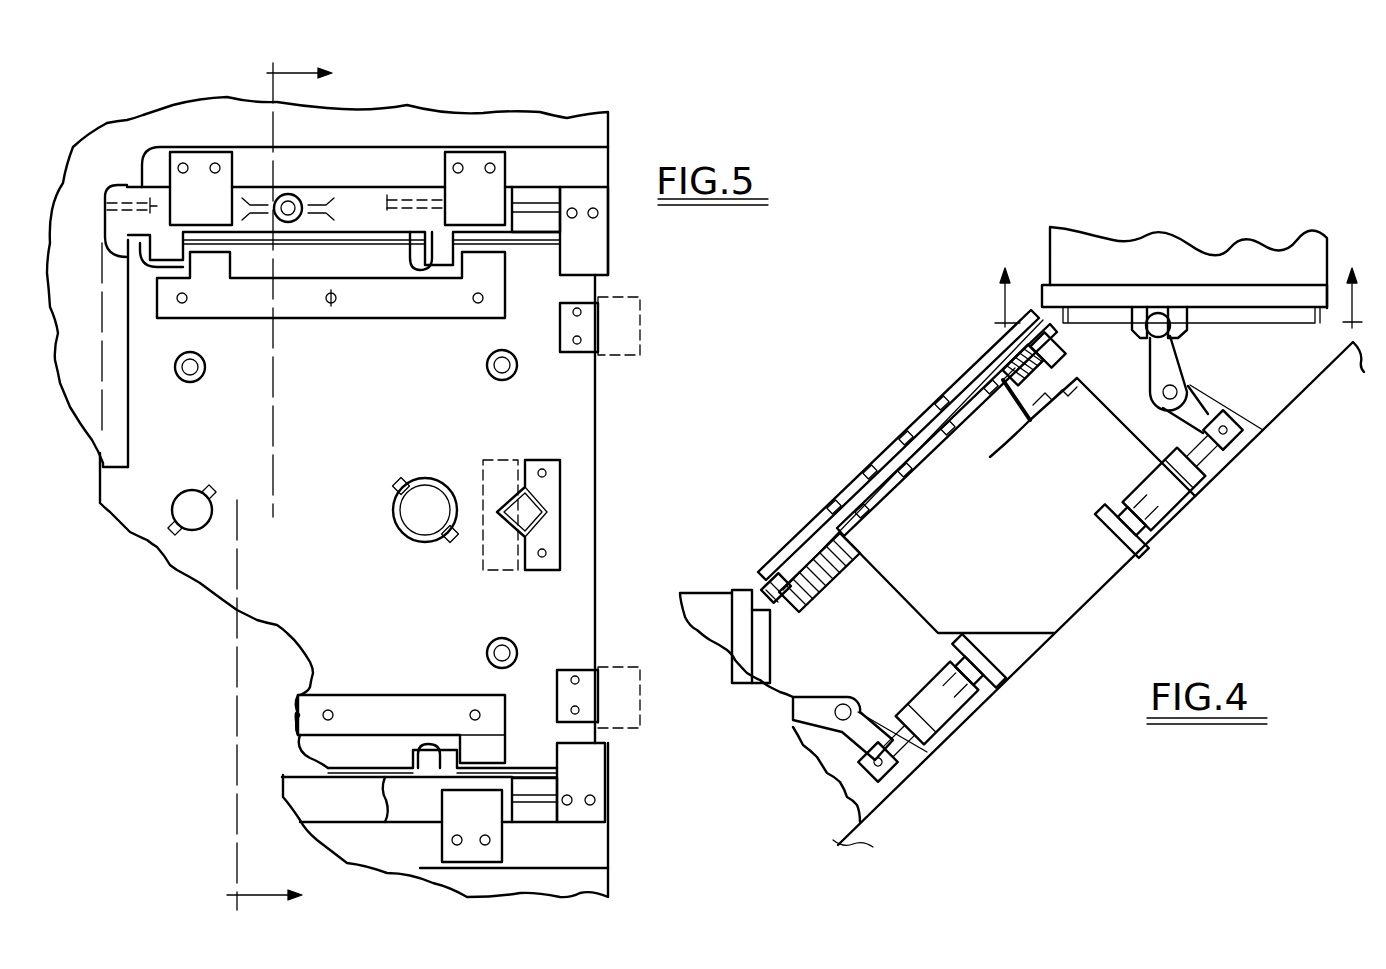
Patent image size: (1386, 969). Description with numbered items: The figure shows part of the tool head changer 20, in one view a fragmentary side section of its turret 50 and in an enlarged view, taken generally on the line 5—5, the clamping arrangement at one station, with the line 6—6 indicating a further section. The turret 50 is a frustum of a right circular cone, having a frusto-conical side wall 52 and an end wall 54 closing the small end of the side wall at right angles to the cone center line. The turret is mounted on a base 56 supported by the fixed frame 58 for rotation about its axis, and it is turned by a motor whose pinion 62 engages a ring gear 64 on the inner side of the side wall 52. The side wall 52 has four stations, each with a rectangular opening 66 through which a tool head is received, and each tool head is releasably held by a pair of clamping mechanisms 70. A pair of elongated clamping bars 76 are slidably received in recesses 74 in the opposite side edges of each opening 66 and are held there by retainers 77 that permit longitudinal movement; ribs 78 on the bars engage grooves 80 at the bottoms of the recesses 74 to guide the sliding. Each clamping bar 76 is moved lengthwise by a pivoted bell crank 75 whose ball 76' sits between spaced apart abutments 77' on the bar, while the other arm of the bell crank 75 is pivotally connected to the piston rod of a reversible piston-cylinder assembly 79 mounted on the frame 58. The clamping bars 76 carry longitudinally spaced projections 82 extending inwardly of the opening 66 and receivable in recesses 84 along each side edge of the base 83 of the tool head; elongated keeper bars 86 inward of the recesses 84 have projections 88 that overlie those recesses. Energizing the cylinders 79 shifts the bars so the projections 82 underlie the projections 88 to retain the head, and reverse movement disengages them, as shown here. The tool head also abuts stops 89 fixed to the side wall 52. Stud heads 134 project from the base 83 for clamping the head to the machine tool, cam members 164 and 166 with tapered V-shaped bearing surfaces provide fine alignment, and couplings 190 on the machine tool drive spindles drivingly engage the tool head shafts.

In FIG. 5, the clamping mechanism 70 is at (129, 160).
In FIG. 5, the section line 6- 6 is at (279, 486).
In FIG. 5, the recess 74 is at (360, 187).
In FIG. 5, the clamping bar 76 is at (319, 465).
In FIG. 5, the ball 76' is at (290, 187).
In FIG. 4, the ball 76' is at (1195, 271).
In FIG. 5, the retainer 77 is at (341, 489).
In FIG. 4, the abutment 77' is at (1160, 272).
In FIG. 5, the rib 78 is at (387, 200).
In FIG. 5, the groove 80 is at (537, 203).
In FIG. 5, the projection 82 is at (143, 260).
In FIG. 5, the base 83 is at (582, 393).
In FIG. 4, the base 83 is at (1252, 290).
In FIG. 5, the recess 84 is at (250, 242).
In FIG. 5, the keeper bar 86 is at (377, 317).
In FIG. 5, the projection 88 is at (210, 267).
In FIG. 5, the stop 89 is at (598, 255).
In FIG. 5, the head 134 is at (187, 383).
In FIG. 5, the cam member 164 is at (550, 490).
In FIG. 5, the cam member 166 is at (482, 557).
In FIG. 5, the coupling 190 is at (392, 515).
In FIG. 5, the opening 66 is at (297, 753).
In FIG. 4, the section line 5- 5 is at (1177, 298).
In FIG. 4, the tool head changer 20 is at (941, 385).
In FIG. 4, the turret 50 is at (823, 530).
In FIG. 4, the side wall 52 is at (770, 658).
In FIG. 4, the end wall 54 is at (840, 500).
In FIG. 4, the base 56 is at (1017, 546).
In FIG. 4, the fixed frame 58 is at (1247, 442).
In FIG. 4, the pinion 62 is at (1000, 370).
In FIG. 4, the ring gear 64 is at (777, 575).
In FIG. 4, the bell crank 75 is at (1177, 367).
In FIG. 4, the piston-cylinder assembly 79 is at (1163, 515).